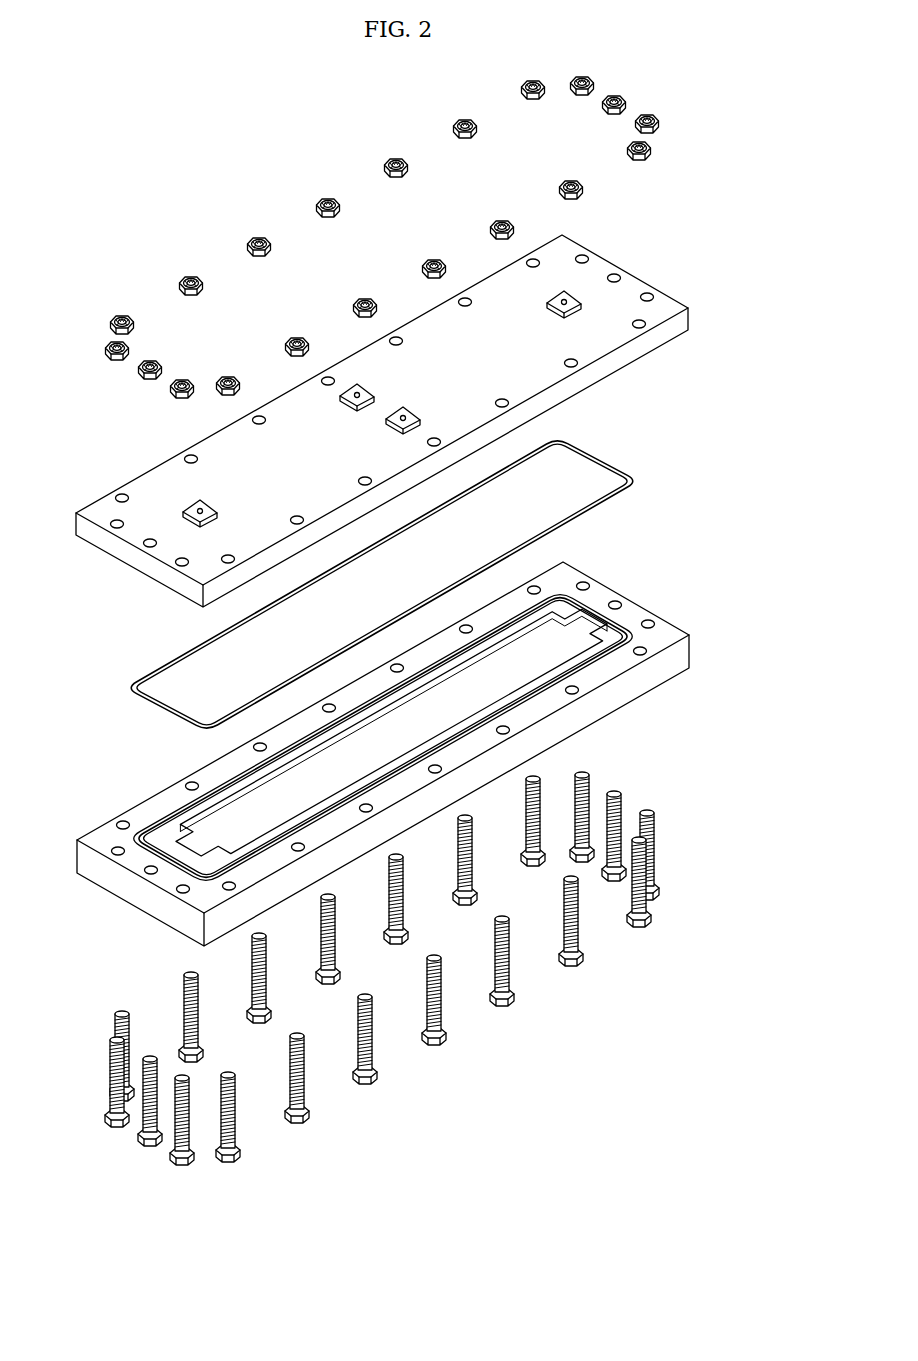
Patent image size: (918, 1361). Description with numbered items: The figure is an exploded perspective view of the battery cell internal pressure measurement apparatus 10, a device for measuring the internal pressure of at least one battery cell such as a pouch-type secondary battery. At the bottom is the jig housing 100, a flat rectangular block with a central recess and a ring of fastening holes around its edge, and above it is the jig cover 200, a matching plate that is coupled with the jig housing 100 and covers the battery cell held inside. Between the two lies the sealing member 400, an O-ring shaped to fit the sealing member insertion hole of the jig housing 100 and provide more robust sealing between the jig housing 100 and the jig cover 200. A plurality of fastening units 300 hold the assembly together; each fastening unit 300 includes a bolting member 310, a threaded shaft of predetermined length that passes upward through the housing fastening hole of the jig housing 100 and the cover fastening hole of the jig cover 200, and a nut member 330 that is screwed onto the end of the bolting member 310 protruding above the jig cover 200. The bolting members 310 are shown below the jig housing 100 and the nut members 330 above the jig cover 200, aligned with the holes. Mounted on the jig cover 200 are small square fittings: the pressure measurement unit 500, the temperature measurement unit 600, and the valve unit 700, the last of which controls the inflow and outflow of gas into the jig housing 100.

The battery cell internal pressure measurement apparatus 10 is at (160, 160).
The jig housing 100 is at (672, 618).
The jig cover 200 is at (673, 291).
The fastening unit 300 is at (657, 808).
The bolting member 310 is at (307, 1083).
The nut member 330 is at (652, 116).
The sealing member 400 is at (620, 455).
The pressure measurement unit 500 is at (415, 404).
The temperature measurement unit 600 is at (353, 374).
The valve unit 700 is at (576, 290).